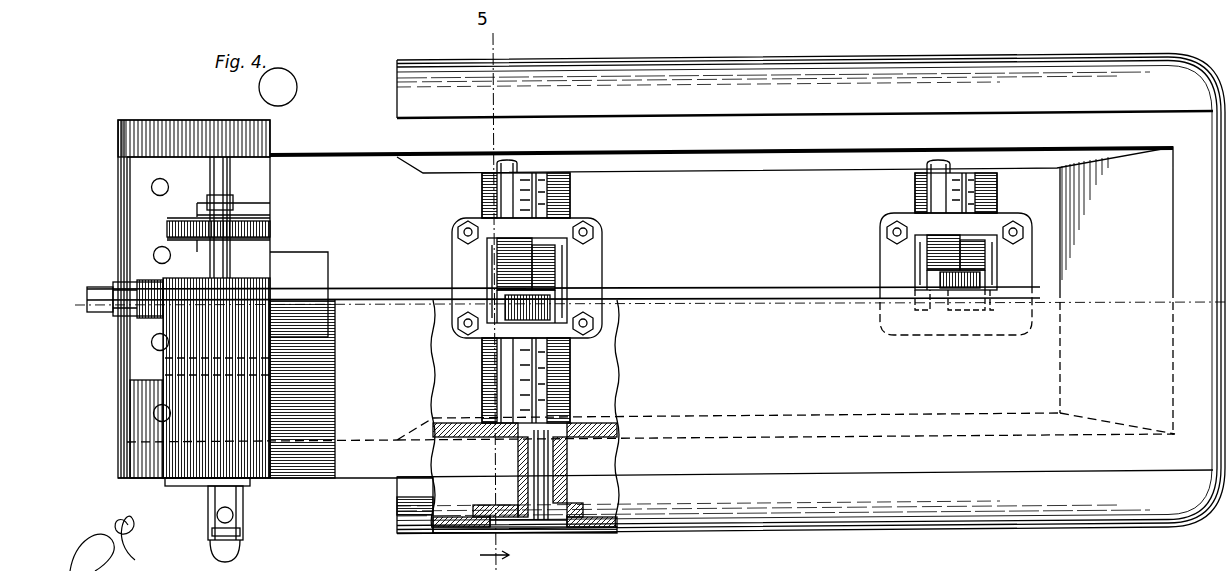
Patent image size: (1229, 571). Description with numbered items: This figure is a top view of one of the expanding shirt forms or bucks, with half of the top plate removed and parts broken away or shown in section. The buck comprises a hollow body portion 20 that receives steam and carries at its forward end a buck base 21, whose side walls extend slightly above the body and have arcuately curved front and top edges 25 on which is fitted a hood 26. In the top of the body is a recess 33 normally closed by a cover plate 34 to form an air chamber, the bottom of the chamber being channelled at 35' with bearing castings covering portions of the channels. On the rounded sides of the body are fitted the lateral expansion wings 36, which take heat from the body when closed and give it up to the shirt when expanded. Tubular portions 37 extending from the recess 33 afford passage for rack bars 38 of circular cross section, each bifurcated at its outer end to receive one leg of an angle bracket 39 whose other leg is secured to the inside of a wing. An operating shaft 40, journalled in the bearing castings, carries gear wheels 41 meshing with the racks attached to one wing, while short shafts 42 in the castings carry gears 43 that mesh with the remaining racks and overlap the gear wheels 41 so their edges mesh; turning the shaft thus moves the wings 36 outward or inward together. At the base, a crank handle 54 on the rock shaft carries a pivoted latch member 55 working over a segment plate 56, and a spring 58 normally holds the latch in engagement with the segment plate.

The body portion 20 is at (369, 125).
The buck base 21 is at (128, 220).
The arcuately curved front and top edges 25 is at (178, 128).
The hood 26 is at (127, 442).
The recess 33 is at (330, 172).
The cover plate 34 is at (367, 462).
The channels 35' is at (742, 275).
The wings 36 is at (735, 72).
The tubular portions 37 is at (567, 490).
The rack bars 38 is at (498, 383).
The angle bracket 39 is at (540, 525).
The operating shaft 40 is at (683, 288).
The gear wheels 41 is at (557, 280).
The short shafts 42 is at (592, 257).
The gears 43 is at (497, 258).
The crank handle 54 is at (226, 551).
The latch member 55 is at (243, 515).
The segment plate 56 is at (183, 487).
The spring 58 is at (240, 533).